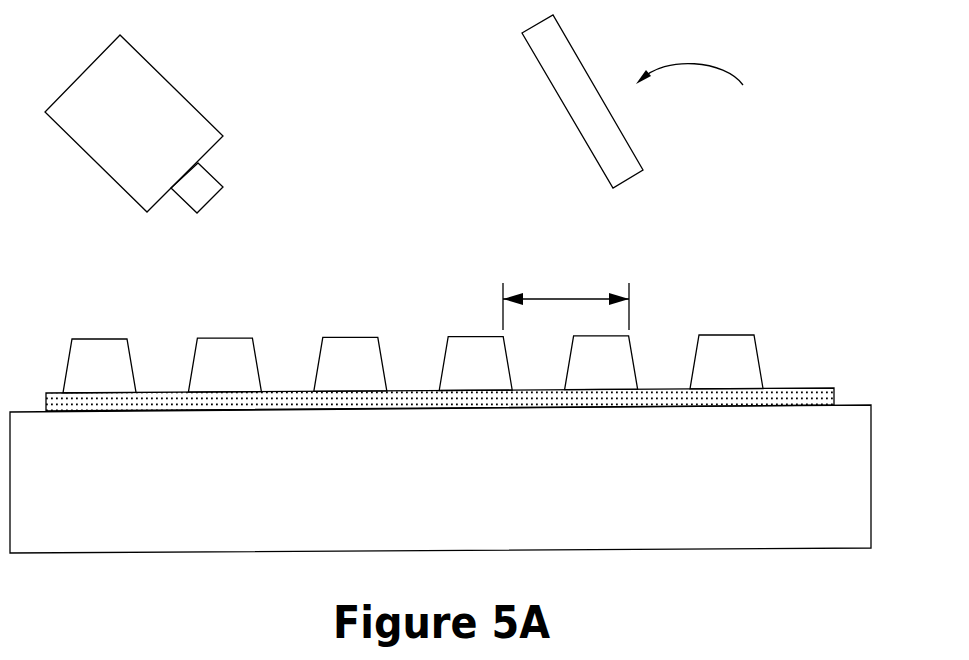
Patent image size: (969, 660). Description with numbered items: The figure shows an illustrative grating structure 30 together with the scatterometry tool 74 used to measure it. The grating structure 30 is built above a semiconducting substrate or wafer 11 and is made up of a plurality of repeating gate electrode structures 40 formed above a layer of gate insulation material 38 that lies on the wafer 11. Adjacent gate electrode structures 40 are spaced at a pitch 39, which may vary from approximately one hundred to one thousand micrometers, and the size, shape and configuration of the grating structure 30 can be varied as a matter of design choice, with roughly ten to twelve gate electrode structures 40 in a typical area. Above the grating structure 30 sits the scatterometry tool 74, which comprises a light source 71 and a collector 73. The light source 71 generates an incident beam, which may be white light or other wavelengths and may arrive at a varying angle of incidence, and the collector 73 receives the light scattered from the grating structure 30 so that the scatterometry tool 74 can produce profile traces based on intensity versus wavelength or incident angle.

The semiconducting substrate 11 is at (108, 535).
The grating structure 30 is at (469, 294).
The layer of gate insulation material 38 is at (798, 398).
The pitch 39 is at (558, 298).
The gate electrode structure 40 is at (217, 357).
The light source 71 is at (187, 127).
The collector 73 is at (582, 123).
The scatterometry tool 74 is at (710, 78).